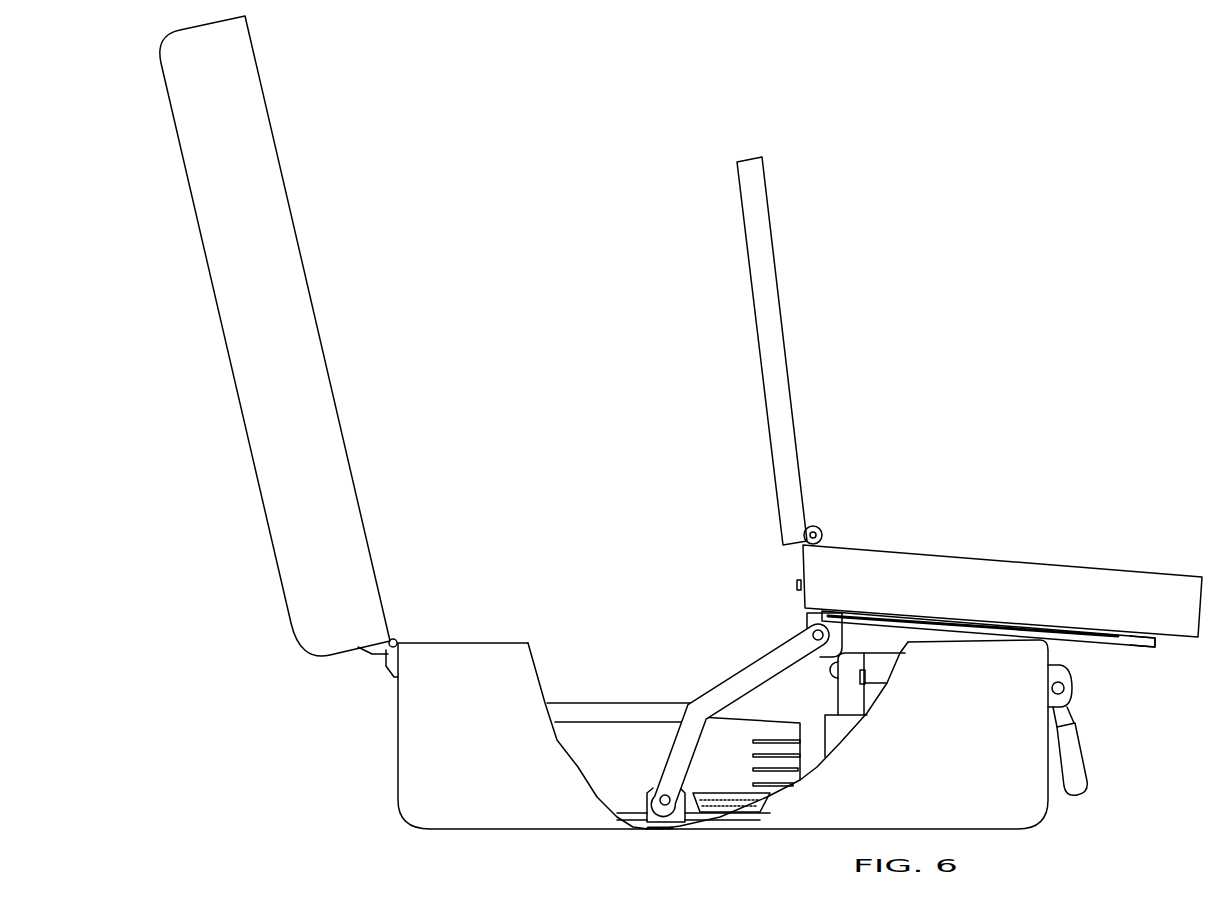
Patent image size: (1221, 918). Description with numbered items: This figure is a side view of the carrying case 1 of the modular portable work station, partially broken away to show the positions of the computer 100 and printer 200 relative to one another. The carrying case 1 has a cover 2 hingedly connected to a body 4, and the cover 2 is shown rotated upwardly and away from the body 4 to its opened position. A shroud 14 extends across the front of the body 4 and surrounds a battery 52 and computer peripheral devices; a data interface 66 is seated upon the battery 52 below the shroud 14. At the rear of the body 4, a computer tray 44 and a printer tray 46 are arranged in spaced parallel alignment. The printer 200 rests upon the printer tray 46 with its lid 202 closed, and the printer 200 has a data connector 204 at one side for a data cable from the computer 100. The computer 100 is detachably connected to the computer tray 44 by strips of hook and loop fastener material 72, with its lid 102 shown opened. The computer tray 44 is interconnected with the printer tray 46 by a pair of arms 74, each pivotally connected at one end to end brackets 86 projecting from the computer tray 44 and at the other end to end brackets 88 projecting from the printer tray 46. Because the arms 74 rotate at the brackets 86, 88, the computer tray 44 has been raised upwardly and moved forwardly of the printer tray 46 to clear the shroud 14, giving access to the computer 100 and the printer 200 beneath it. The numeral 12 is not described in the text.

The carrying case 1 is at (425, 550).
The cover 2 is at (295, 300).
The body 4 is at (398, 770).
The actuating lever 12 is at (1072, 748).
The shroud 14 is at (893, 655).
The computer tray 44 is at (1122, 640).
The printer tray 46 is at (640, 822).
The lead acid battery 52 is at (848, 725).
The data interface 66 is at (875, 692).
The hook and loop fastener material 72 is at (975, 617).
The arms 74 is at (745, 677).
The end brackets 86 is at (808, 628).
The end brackets 88 is at (663, 818).
The computer 100 is at (905, 570).
The lid 102 is at (767, 300).
The printer 200 is at (592, 755).
The lid 202 is at (560, 713).
The data connector 204 is at (730, 812).